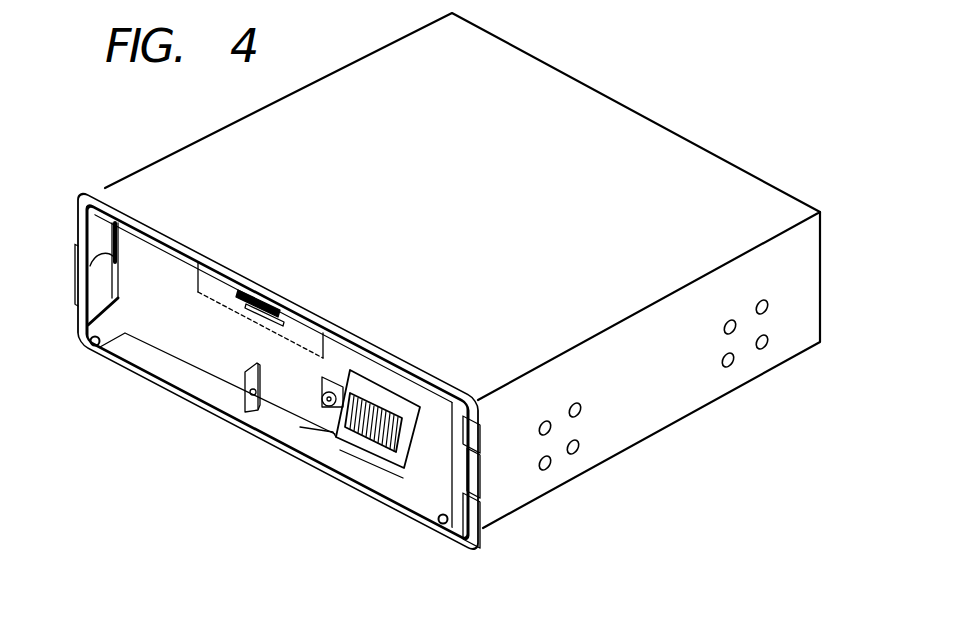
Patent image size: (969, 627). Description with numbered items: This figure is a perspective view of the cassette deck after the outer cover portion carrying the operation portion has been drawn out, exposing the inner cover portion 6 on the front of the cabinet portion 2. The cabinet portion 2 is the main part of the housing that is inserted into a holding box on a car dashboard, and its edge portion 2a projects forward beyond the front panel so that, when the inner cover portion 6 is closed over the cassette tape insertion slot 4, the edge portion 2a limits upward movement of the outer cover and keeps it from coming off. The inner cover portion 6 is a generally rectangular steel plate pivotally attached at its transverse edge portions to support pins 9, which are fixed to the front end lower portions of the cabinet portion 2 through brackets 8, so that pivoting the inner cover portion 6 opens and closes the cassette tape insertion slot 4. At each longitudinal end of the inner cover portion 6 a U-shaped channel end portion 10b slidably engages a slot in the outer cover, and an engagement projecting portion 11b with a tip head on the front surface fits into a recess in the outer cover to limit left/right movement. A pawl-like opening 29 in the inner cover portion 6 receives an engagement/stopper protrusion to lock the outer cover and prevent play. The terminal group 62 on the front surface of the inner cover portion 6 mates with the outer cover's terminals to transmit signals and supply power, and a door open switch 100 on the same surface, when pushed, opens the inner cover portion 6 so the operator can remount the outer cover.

The cabinet portion 2 is at (603, 118).
The edge portion 2a is at (372, 347).
The cassette tape insertion slot 4 is at (312, 316).
The inner cover portion 6 is at (190, 338).
The brackets 8 is at (76, 303).
The support pins 9 is at (108, 350).
The U-shaped channel end portion 10b is at (90, 265).
The engagement projecting portion 11b is at (233, 383).
The pawl-like opening 29 is at (258, 300).
The terminal group 62 is at (360, 455).
The door open switch 100 is at (322, 405).